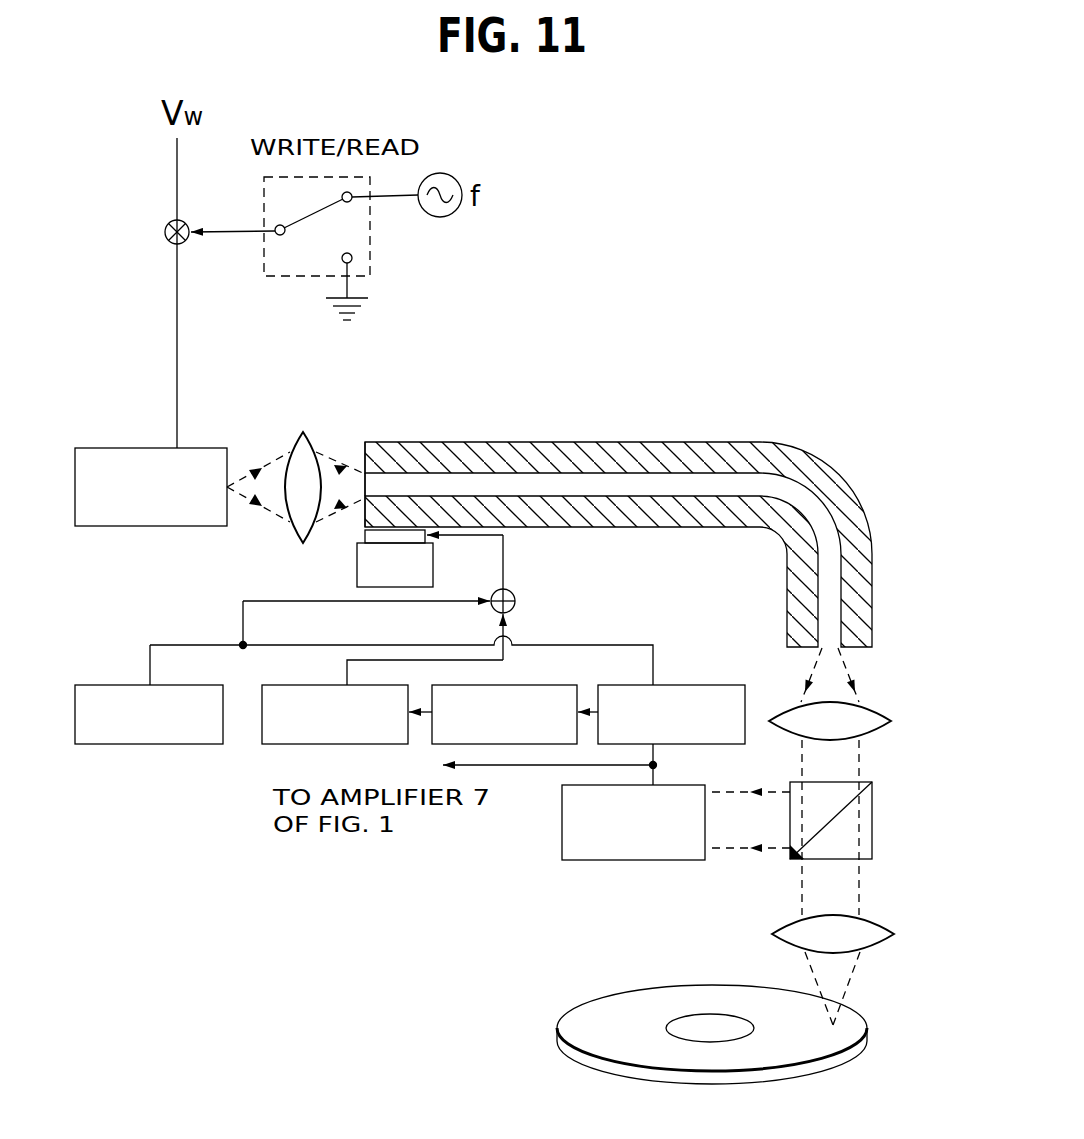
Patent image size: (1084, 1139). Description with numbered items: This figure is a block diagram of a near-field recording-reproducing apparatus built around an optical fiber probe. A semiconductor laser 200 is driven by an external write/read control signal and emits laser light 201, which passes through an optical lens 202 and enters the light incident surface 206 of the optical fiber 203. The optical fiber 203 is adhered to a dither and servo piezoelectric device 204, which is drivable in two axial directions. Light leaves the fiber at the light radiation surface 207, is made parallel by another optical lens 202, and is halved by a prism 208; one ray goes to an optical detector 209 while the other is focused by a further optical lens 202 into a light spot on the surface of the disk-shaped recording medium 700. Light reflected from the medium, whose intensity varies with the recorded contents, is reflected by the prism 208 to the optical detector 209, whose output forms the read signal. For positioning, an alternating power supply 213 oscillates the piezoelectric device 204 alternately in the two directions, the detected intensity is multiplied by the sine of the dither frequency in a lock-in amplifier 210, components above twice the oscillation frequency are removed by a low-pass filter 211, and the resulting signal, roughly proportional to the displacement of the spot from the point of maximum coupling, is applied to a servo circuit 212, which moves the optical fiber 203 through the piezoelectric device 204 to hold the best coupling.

The semiconductor laser 200 is at (155, 447).
The laser light 201 is at (270, 495).
The optical lens 202 is at (296, 432).
The optical fiber 203 is at (644, 518).
The dither and servo piezoelectric device 204 is at (378, 548).
The light incident surface 206 is at (364, 470).
The light radiation surface 207 is at (862, 656).
The prism 208 is at (873, 840).
The optical detector 209 is at (661, 861).
The lock-in amplifier 210 is at (712, 684).
The low-pass filter 211 is at (518, 684).
The servo circuit 212 is at (262, 732).
The alternating power supply 213 is at (170, 748).
The optical disk 700 is at (818, 1073).